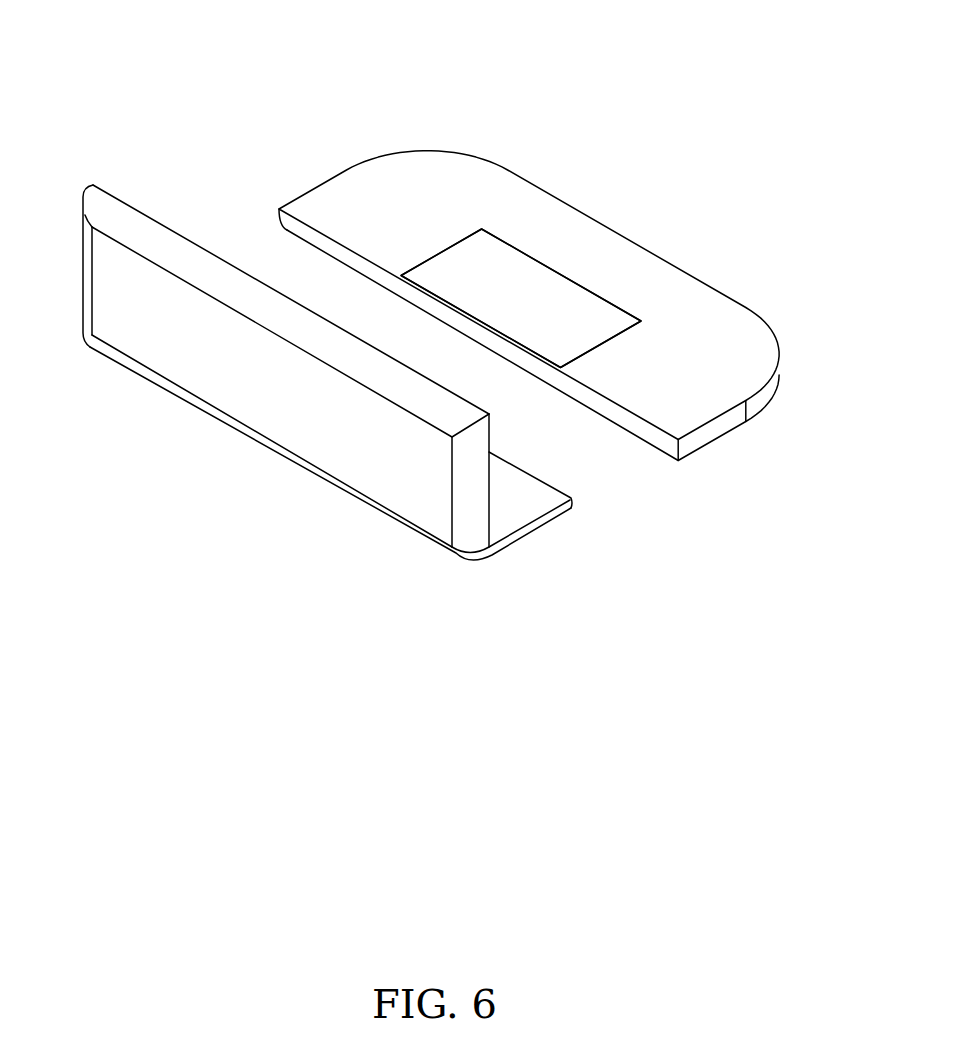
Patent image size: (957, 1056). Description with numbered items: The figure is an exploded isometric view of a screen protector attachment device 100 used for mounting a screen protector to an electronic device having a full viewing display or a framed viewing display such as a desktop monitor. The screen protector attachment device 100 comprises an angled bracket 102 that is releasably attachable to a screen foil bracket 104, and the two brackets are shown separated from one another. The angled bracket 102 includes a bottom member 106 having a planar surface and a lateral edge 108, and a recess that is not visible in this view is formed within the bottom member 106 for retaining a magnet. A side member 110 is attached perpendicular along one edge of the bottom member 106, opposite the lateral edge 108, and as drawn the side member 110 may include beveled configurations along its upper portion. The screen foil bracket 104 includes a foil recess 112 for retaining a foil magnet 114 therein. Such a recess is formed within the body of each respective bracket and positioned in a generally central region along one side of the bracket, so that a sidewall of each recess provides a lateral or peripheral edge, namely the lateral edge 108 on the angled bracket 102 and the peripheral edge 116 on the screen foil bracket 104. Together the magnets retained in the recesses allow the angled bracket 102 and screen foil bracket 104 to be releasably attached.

The screen protector attachment device 100 is at (366, 76).
The angled bracket 102 is at (413, 528).
The screen foil bracket 104 is at (742, 304).
The bottom member 106 is at (544, 523).
The lateral edge 108 is at (557, 494).
The side member 110 is at (130, 207).
The foil recess 112 is at (497, 238).
The foil magnet 114 is at (567, 307).
The peripheral edge 116 is at (668, 453).